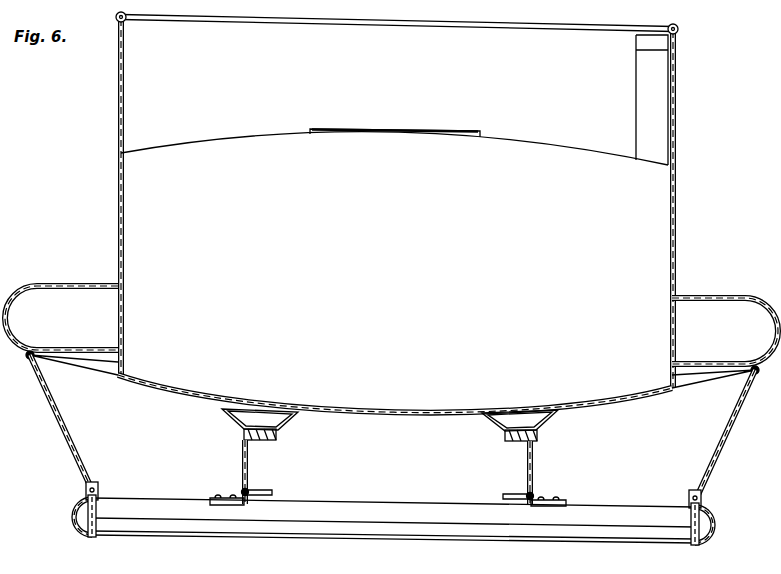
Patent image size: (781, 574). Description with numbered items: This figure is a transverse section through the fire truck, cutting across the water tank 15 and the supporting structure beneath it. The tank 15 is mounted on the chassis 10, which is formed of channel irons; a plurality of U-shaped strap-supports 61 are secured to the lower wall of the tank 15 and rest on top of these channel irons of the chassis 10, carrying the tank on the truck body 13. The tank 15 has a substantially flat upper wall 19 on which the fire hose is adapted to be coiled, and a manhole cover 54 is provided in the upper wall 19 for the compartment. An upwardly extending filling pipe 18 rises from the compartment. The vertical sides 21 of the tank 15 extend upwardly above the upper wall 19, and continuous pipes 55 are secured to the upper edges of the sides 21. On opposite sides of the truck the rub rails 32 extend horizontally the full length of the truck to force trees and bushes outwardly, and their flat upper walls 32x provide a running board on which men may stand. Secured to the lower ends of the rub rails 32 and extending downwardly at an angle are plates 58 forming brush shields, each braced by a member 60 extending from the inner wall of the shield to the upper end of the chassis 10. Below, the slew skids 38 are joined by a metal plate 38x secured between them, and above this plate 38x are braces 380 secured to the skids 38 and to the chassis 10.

The chassis 10 is at (248, 466).
The truck body 13 is at (60, 420).
The water tank 15 is at (118, 209).
The filling pipe 18 is at (660, 47).
The upper wall 19 is at (245, 130).
The vertical sides 21 is at (117, 121).
The rub rails 32 is at (20, 291).
The upper walls of the rub rails 32x is at (70, 286).
The slew skids 38 is at (64, 522).
The metal plate 38x is at (392, 540).
The manhole covers 54 is at (363, 129).
The continuous pipes 55 is at (126, 22).
The plates 58 is at (72, 452).
The member 60 is at (91, 367).
The U-shaped strap-supports 61 is at (238, 417).
The braces 380 is at (161, 508).